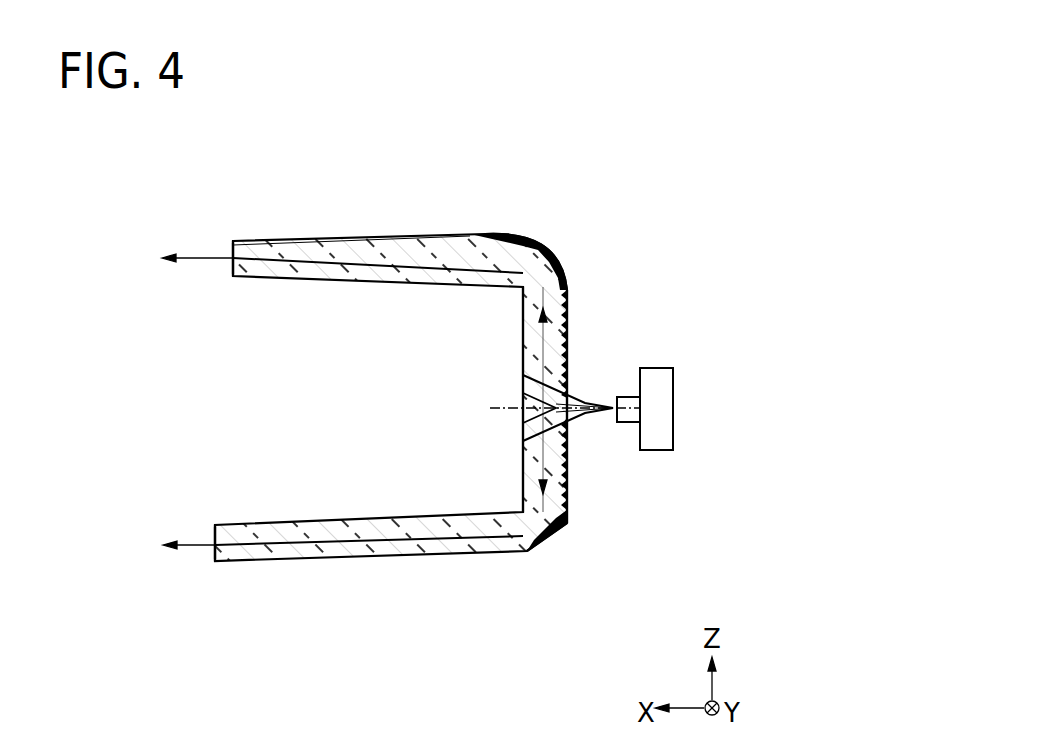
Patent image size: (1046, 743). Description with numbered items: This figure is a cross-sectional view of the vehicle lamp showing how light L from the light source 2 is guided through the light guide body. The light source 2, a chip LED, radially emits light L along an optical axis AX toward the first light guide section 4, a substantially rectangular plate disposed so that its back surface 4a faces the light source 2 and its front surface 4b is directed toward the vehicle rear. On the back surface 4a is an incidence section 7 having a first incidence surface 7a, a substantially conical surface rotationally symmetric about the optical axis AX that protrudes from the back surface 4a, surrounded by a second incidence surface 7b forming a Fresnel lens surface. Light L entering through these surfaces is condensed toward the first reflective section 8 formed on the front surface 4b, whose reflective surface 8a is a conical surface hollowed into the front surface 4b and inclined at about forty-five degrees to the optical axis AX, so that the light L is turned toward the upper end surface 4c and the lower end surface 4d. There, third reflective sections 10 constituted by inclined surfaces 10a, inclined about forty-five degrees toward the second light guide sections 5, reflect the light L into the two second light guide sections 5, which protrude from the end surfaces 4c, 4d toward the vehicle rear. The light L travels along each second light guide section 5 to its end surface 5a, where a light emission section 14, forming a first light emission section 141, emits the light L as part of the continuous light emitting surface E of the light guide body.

The light source 2 is at (657, 450).
The first light guide section 4 is at (523, 352).
The back surface 4a is at (578, 472).
The front surface 4b is at (512, 485).
The upper end surface 4c is at (570, 247).
The lower end surface 4d is at (547, 558).
The second light guide section 5 is at (298, 278).
The end surface 5a is at (224, 273).
The incidence section 7 is at (648, 277).
The first incidence surface 7a is at (567, 385).
The second incidence surface 7b is at (567, 320).
The first reflective section 8 is at (484, 402).
The reflective surface 8a is at (533, 388).
The third reflective section 10 is at (597, 365).
The inclined surface 10a is at (545, 252).
The light emission section 14 is at (233, 242).
The first light emission section 141 is at (215, 527).
The light emitting surface E is at (259, 357).
The light L is at (537, 470).
The optical axis AX is at (500, 412).